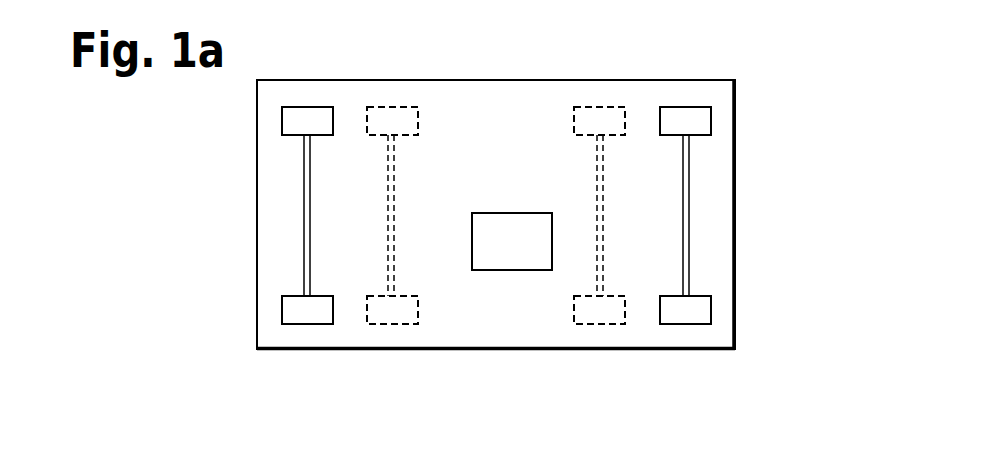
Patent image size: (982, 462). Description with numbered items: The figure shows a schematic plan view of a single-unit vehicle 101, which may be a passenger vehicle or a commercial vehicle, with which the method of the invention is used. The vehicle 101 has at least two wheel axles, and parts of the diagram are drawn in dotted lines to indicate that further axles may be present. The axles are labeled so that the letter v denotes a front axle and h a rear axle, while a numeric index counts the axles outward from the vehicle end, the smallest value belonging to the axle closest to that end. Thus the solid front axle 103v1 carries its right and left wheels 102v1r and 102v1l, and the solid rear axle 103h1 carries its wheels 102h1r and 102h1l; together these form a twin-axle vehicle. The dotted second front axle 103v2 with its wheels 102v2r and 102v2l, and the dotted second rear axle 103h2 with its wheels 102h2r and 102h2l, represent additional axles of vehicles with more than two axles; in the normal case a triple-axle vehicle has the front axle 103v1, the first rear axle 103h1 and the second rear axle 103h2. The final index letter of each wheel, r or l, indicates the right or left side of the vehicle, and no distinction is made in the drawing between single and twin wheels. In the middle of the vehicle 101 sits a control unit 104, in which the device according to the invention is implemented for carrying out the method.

The single-unit vehicle 101 is at (728, 258).
The wheel 102v1r is at (305, 117).
The wheel 102v1l is at (305, 318).
The wheel 102v2r is at (390, 116).
The wheel 102v2l is at (390, 318).
The wheel 102h2r is at (603, 116).
The wheel 102h2l is at (602, 318).
The wheel 102h1r is at (686, 117).
The wheel 102h1l is at (687, 318).
The front axle 103v1 is at (337, 192).
The front axle 103v2 is at (422, 194).
The second rear axle 103h2 is at (597, 200).
The rear axle 103h1 is at (683, 200).
The control unit 104 is at (493, 262).